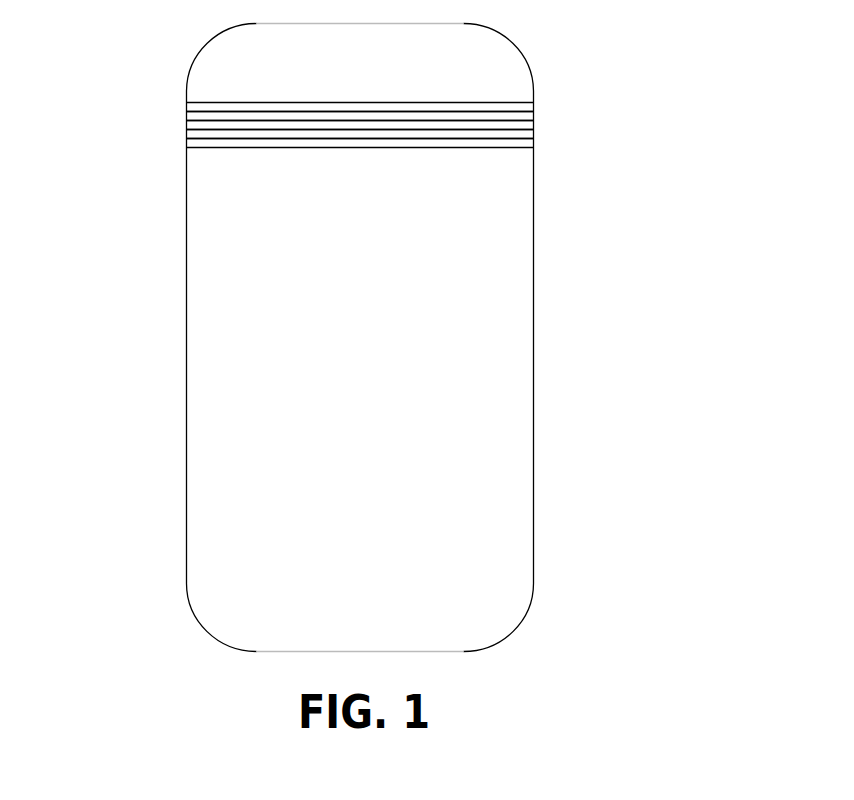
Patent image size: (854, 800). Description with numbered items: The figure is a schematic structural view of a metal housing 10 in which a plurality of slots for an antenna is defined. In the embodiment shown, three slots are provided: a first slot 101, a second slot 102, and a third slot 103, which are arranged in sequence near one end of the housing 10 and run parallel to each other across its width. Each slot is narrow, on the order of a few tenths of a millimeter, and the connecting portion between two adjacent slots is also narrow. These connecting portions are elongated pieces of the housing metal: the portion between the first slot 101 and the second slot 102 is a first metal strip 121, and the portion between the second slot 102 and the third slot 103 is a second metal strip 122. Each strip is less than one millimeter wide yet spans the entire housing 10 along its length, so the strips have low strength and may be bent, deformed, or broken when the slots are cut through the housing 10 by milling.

The housing 10 is at (217, 402).
The first slot 101 is at (193, 106).
The second slot 102 is at (196, 123).
The third slot 103 is at (193, 144).
The first metal strip 121 is at (527, 112).
The second metal strip 122 is at (523, 136).